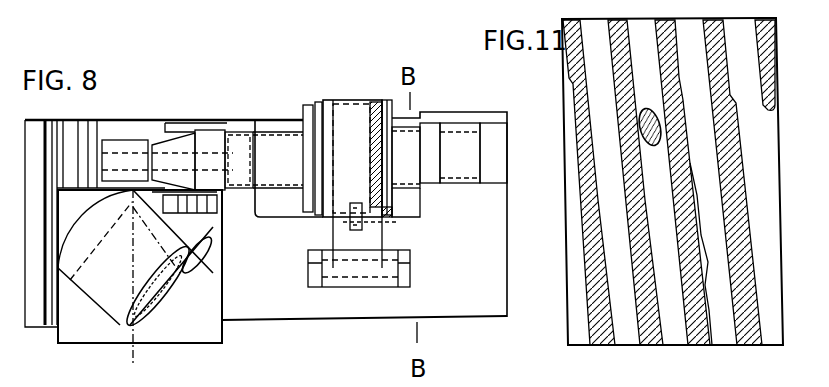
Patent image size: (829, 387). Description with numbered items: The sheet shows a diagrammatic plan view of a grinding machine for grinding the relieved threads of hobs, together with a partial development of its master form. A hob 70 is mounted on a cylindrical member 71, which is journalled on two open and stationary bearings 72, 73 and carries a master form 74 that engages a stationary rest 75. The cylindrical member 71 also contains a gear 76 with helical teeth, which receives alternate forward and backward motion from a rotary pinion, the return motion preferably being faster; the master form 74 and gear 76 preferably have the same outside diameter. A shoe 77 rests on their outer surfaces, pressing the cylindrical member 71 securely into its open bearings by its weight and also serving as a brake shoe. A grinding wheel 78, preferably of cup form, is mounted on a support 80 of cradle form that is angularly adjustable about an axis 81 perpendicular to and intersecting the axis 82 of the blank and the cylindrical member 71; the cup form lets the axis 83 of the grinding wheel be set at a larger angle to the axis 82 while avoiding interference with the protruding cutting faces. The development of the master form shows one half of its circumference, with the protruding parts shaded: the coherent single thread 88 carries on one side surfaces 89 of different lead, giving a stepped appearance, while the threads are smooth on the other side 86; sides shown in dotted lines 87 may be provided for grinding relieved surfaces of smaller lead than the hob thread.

In FIG. 8, the hob 70 is at (115, 152).
In FIG. 8, the cylindrical member 71 is at (230, 132).
In FIG. 8, the open stationary bearing 72 is at (173, 125).
In FIG. 8, the open stationary bearing 73 is at (495, 117).
In FIG. 8, the master form 74 is at (342, 127).
In FIG. 8, the stationary rest 75 is at (352, 222).
In FIG. 11, the stationary rest 75 is at (641, 123).
In FIG. 8, the gear 76 is at (371, 104).
In FIG. 8, the shoe 77 is at (395, 218).
In FIG. 8, the grinding wheel 78 is at (115, 190).
In FIG. 8, the support 80 is at (177, 320).
In FIG. 8, the axis 81 is at (132, 355).
In FIG. 8, the axis 82 is at (122, 160).
In FIG. 8, the axis 83 is at (213, 227).
In FIG. 11, the side 86 is at (732, 313).
In FIG. 11, the sides 87 is at (703, 240).
In FIG. 11, the single thread 88 is at (647, 313).
In FIG. 11, the surfaces 89 is at (657, 307).